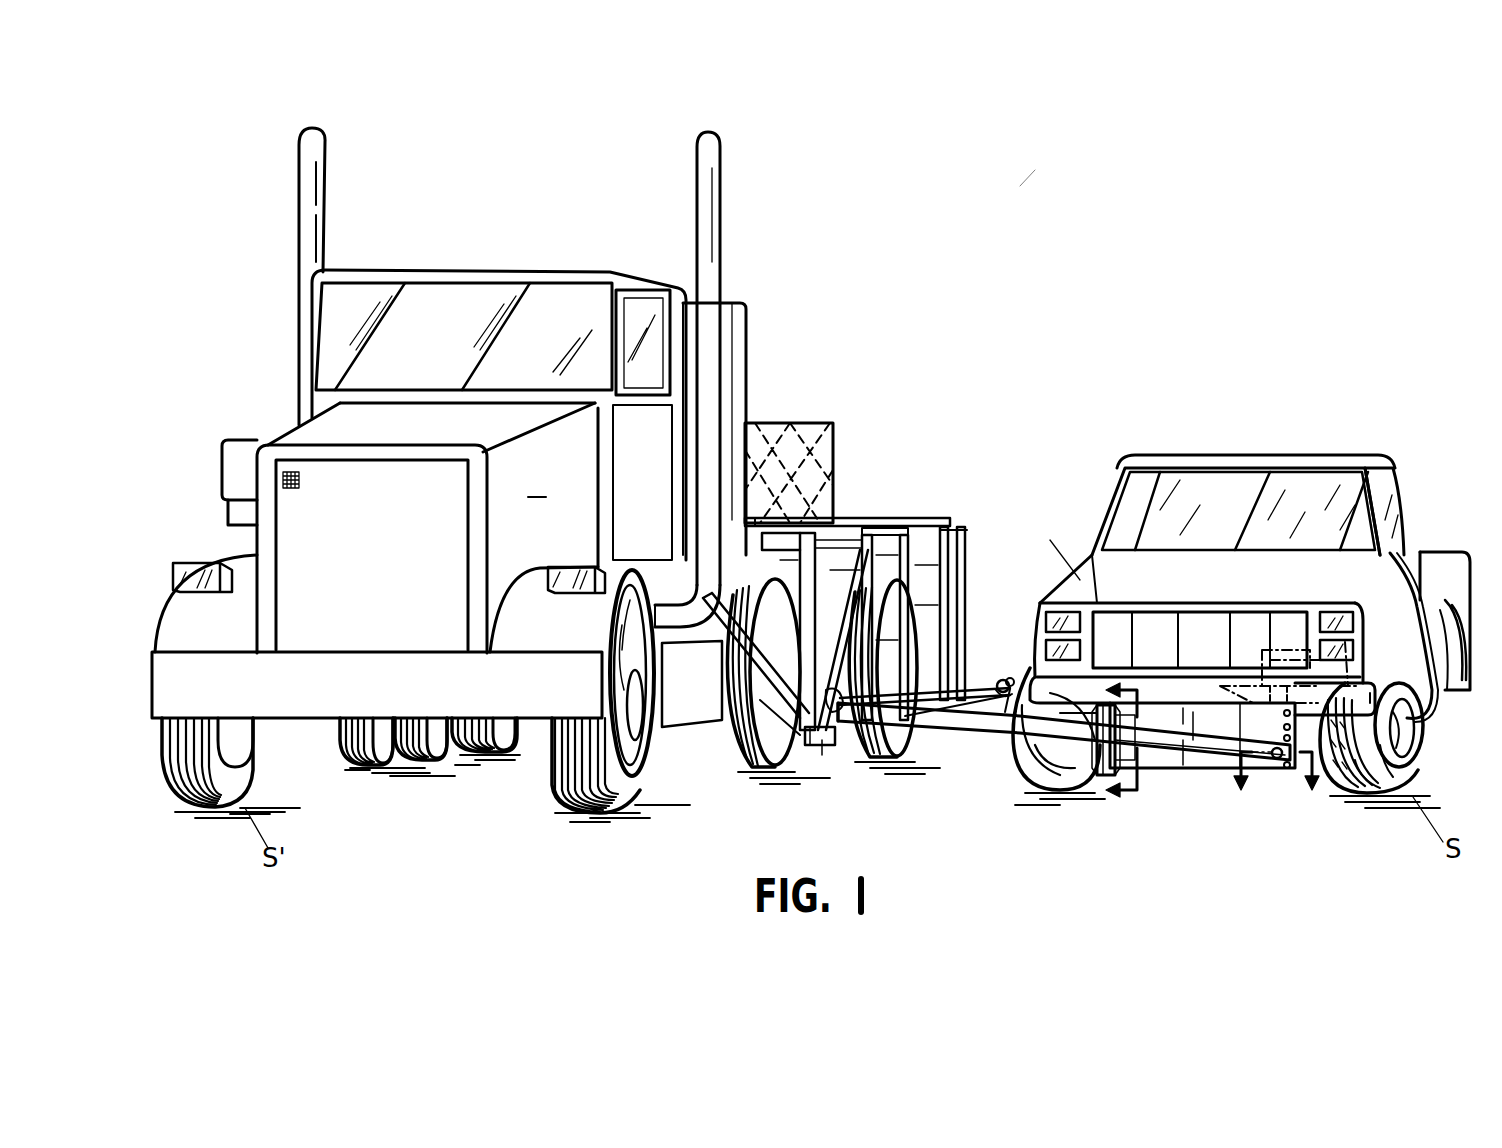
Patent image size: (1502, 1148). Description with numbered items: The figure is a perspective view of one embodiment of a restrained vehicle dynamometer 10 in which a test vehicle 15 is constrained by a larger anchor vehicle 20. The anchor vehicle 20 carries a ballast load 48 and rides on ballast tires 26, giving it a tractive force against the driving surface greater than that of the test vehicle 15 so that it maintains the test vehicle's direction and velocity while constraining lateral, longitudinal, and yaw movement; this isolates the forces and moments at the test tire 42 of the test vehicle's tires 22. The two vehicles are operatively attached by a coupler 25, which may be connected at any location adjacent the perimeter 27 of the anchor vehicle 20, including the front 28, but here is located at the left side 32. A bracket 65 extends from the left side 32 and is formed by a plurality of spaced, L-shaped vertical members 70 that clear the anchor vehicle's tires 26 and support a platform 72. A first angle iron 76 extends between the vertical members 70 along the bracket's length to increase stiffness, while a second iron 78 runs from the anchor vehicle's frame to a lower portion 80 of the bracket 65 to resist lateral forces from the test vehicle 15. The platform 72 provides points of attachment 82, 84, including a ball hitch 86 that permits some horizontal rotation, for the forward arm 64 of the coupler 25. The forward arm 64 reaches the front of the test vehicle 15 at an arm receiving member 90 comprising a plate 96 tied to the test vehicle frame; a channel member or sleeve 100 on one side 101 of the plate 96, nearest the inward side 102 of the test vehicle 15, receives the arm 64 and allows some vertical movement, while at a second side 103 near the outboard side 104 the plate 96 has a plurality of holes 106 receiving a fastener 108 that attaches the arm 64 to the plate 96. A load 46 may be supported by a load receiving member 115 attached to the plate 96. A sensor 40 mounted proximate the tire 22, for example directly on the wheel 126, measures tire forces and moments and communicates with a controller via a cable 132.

The restrained vehicle dynamometer 10 is at (1013, 198).
The test vehicle 15 is at (1278, 432).
The anchor vehicle 20 is at (566, 246).
The tires 22 is at (1040, 782).
The coupler 25 is at (990, 498).
The ballast tires 26 is at (182, 791).
The perimeter 27 is at (762, 522).
The front 28 is at (302, 710).
The left side 32 is at (805, 520).
The sensor 40 is at (1407, 750).
The test tire 42 is at (1370, 795).
The load 46 is at (1285, 640).
The load (ballast) 48 is at (758, 420).
The forward arm 64 is at (961, 732).
The bracket 65 is at (972, 570).
The vertical members 70 is at (855, 548).
The platform 72 is at (972, 700).
The first angle iron 76 is at (862, 558).
The second iron 78 is at (772, 678).
The lower portion 80 is at (775, 696).
The point of attachment 82 is at (831, 752).
The point of attachment 84 is at (1000, 672).
The ball hitch 86 is at (866, 782).
The arm receiving member 90 is at (1168, 775).
The plate 96 is at (1188, 772).
The channel member or sleeve 100 is at (1098, 760).
The one side 101 is at (1122, 765).
The inward side 102 is at (1080, 575).
The second side 103 is at (1268, 772).
The outboard side 104 is at (1432, 580).
The holes 106 is at (1290, 762).
The fastener 108 is at (1282, 762).
The load receiving member 115 is at (1222, 686).
The wheel 126 is at (1390, 768).
The cable 132 is at (1405, 592).